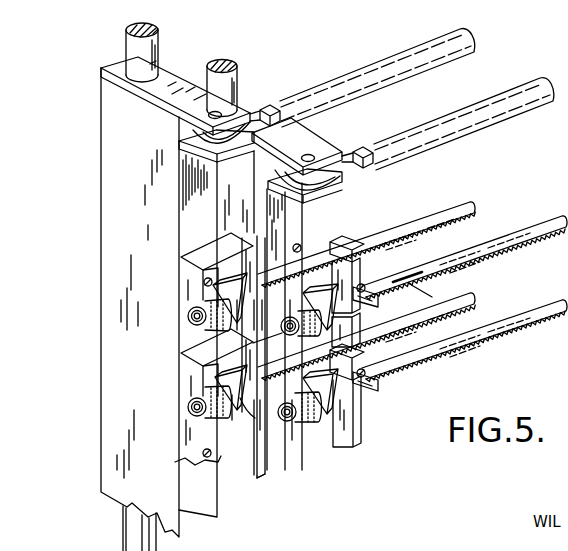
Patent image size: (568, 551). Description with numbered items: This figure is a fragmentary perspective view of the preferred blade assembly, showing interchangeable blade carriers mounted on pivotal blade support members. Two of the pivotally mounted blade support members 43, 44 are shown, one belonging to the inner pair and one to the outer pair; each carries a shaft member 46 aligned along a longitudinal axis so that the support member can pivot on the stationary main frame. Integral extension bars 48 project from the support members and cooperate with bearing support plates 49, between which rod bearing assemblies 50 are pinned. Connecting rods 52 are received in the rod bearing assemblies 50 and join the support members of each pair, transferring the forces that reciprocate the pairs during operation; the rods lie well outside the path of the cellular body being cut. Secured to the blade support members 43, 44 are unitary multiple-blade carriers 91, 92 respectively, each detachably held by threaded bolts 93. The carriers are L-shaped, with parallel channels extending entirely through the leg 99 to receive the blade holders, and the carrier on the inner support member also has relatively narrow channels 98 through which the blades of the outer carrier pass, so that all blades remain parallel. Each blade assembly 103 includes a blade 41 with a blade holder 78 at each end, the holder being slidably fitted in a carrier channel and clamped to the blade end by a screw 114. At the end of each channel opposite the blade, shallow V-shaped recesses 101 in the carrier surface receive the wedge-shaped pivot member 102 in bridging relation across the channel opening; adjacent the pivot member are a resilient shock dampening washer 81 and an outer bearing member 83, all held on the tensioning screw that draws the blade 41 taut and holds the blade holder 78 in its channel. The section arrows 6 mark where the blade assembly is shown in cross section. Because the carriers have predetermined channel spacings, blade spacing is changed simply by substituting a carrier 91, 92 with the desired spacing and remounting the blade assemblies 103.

The section line 6- 6 is at (282, 333).
The blade 41 is at (474, 206).
The blade support member 43 is at (243, 188).
The blade support member 44 is at (113, 227).
The shaft member 46 is at (137, 44).
The extension bar 48 is at (178, 80).
The bearing support plate 49 is at (183, 145).
The rod bearing assembly 50 is at (262, 108).
The connecting rod 52 is at (388, 62).
The blade holder 78 is at (243, 398).
The shock dampening washer 81 is at (214, 330).
The outer bearing member 83 is at (197, 303).
The blade carrier 91 is at (353, 447).
The blade carrier 92 is at (257, 484).
The threaded bolt 93 is at (205, 282).
The narrow channel 98 is at (325, 245).
The leg 99 is at (259, 458).
The shallow recess 101 is at (330, 334).
The wedge-shaped pivot member 102 is at (230, 284).
The blade assembly 103 is at (190, 327).
The screw 114 is at (361, 290).